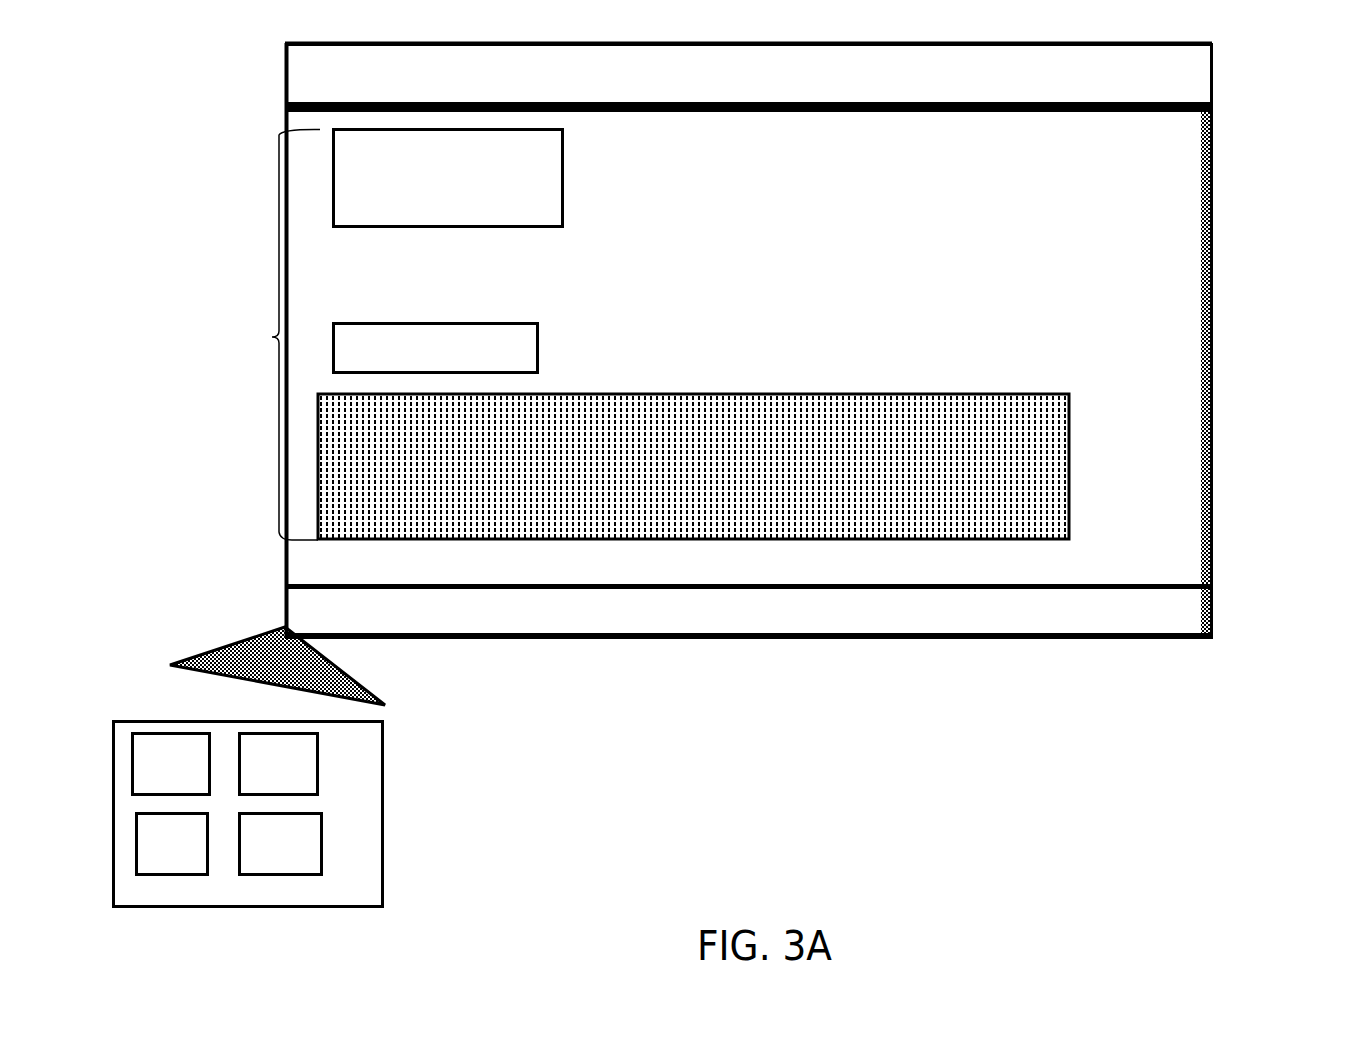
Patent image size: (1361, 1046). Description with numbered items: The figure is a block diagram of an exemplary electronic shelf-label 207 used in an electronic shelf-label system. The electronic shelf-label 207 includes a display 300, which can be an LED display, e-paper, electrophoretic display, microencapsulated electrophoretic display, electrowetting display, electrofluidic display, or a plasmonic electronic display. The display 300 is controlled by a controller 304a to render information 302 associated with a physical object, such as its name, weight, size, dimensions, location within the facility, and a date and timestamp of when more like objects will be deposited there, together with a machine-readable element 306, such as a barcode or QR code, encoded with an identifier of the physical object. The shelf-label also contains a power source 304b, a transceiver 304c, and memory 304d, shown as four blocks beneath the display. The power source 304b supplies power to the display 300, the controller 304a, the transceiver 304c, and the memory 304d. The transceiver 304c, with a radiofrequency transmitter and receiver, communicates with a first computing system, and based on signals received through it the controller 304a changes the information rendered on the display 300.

The electronic shelf-label 207 is at (1213, 287).
The display 300 is at (696, 477).
The information 302 is at (665, 477).
The machine-readable element 306 is at (718, 542).
The controller 304a is at (171, 764).
The power source 304b is at (279, 764).
The transceiver 304c is at (172, 844).
The memory 304d is at (281, 844).